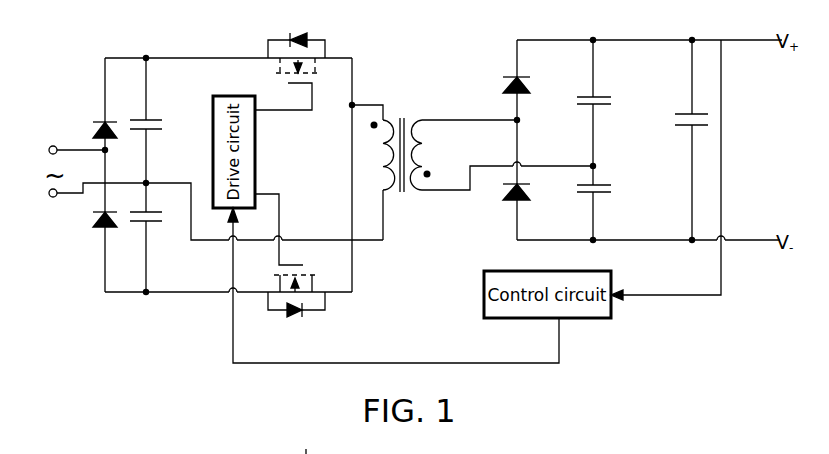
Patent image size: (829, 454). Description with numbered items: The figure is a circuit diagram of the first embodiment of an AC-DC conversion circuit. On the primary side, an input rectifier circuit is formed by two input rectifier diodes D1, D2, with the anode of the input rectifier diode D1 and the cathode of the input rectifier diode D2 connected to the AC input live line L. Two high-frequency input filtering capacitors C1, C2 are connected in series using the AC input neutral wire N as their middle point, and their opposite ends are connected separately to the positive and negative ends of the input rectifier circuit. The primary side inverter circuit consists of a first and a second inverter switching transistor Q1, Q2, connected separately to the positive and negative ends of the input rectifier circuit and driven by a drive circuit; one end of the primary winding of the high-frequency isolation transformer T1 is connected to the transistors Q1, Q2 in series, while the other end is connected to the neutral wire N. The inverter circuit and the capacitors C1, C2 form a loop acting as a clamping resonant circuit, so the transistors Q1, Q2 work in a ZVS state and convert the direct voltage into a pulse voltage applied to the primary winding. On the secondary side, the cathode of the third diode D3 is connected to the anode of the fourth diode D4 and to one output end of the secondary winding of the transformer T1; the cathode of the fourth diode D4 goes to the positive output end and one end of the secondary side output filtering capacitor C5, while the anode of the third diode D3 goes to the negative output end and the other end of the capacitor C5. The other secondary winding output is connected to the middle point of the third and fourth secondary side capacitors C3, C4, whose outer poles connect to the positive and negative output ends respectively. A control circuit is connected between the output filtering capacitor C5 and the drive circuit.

The AC input live line L is at (42, 150).
The AC input neutral wire N is at (42, 193).
The input rectifier diode D1 is at (91, 125).
The input rectifier diode D2 is at (91, 220).
The high-frequency input filtering capacitor C1 is at (158, 120).
The high-frequency input filtering capacitor C2 is at (158, 237).
The first inverter switching transistor Q1 is at (299, 71).
The second inverter switching transistor Q2 is at (299, 255).
The high-frequency isolation transformer T1 is at (472, 161).
The third diode D3 is at (504, 180).
The fourth diode D4 is at (504, 80).
The third secondary side capacitor C3 is at (582, 103).
The fourth secondary side capacitor C4 is at (582, 203).
The secondary side output filtering capacitor C5 is at (678, 140).